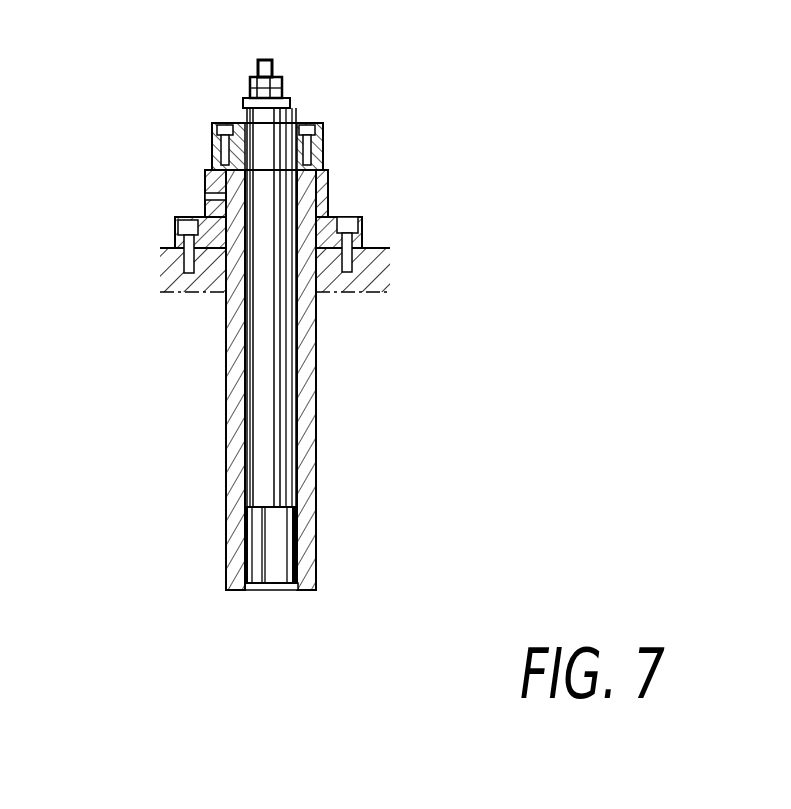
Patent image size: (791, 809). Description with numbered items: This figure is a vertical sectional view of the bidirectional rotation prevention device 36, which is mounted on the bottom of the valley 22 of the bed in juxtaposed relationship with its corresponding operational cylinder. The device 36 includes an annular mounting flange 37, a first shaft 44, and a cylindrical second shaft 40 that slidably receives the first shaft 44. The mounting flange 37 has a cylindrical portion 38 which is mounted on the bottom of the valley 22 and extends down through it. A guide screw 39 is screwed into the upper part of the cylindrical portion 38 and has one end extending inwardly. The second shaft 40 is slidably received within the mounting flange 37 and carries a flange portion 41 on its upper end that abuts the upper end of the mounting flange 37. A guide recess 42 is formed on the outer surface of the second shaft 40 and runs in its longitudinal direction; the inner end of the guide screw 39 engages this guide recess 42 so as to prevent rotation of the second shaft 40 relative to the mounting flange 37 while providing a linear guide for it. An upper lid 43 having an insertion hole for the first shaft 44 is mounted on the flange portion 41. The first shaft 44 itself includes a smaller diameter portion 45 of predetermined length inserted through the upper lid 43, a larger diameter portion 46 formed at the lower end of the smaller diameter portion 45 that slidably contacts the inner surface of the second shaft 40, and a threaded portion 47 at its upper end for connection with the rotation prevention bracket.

The valley 22 is at (368, 250).
The bidirectional rotation prevention device 36 is at (196, 156).
The annular mounting flange 37 is at (331, 187).
The cylindrical portion 38 is at (200, 287).
The guide screw 39 is at (207, 195).
The second shaft 40 is at (307, 387).
The flange portion 41 is at (323, 155).
The guide recess 42 is at (230, 423).
The upper lid 43 is at (323, 124).
The first shaft 44 is at (250, 352).
The smaller diameter portion 45 is at (272, 323).
The larger diameter portion 46 is at (285, 544).
The threaded portion 47 is at (273, 64).